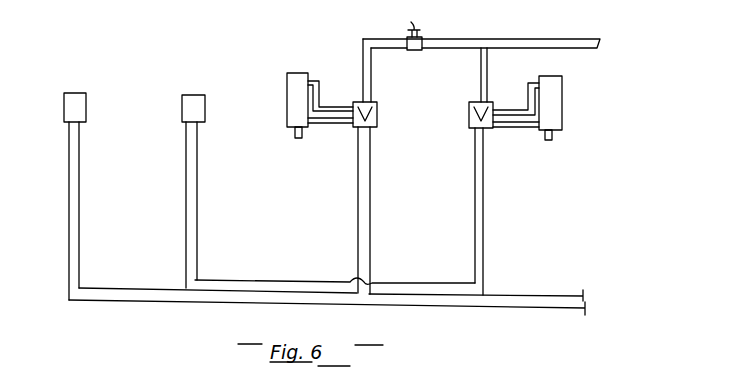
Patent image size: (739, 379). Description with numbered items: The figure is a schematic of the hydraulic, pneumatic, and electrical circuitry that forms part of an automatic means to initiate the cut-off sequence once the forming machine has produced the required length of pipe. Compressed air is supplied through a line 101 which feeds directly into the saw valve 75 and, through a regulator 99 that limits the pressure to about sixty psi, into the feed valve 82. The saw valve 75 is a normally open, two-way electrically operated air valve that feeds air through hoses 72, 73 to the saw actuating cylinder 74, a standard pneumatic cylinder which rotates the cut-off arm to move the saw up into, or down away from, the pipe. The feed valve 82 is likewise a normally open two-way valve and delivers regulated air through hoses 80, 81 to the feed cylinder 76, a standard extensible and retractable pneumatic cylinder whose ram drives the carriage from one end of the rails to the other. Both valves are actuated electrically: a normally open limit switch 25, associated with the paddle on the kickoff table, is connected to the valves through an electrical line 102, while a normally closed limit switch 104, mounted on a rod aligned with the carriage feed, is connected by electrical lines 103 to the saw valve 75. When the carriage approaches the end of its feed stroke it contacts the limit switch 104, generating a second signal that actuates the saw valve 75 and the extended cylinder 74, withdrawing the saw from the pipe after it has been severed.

The limit switch 25 is at (86, 103).
The limit switch 104 is at (205, 110).
The electrical line 102 is at (86, 250).
The electrical lines 103 is at (201, 229).
The feed cylinder 76 is at (287, 96).
The hose 81 is at (336, 105).
The hose 80 is at (339, 126).
The feed valve 82 is at (377, 115).
The regulator 99 is at (411, 22).
The line 101 is at (580, 40).
The saw valve 75 is at (469, 118).
The hose 72 is at (514, 96).
The hose 73 is at (501, 129).
The saw actuating cylinder 74 is at (562, 107).